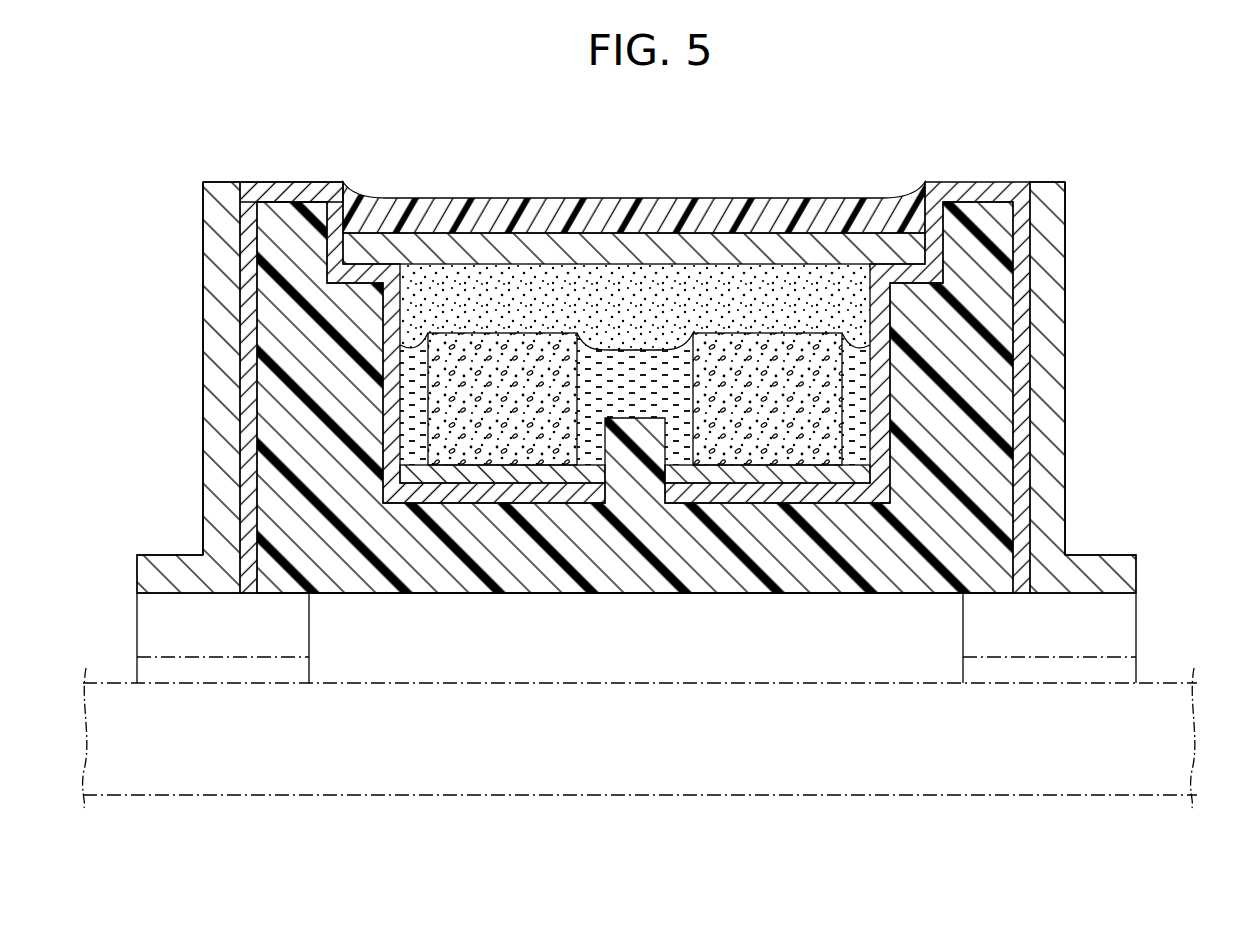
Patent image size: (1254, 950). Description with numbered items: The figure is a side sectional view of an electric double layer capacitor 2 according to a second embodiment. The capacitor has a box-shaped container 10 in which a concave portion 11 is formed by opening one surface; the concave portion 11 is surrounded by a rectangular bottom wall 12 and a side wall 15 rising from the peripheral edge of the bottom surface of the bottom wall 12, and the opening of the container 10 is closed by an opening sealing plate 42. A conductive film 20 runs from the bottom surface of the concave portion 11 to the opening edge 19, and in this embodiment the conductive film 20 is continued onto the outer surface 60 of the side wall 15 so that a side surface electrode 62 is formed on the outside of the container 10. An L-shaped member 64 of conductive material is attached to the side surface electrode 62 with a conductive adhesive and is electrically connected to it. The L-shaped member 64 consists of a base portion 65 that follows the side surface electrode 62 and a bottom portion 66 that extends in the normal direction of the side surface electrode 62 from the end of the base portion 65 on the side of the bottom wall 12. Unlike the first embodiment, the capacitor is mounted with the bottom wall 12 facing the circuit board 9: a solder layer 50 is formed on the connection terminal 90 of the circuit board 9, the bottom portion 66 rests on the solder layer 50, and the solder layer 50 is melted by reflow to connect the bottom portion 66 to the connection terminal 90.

The electric double layer capacitor 2 is at (278, 104).
The circuit board 9 is at (768, 797).
The container 10 is at (375, 598).
The concave portion 11 is at (642, 398).
The bottom wall 12 is at (642, 583).
The side wall 15 is at (275, 385).
The opening edge 19 is at (278, 183).
The conductive film 20 is at (326, 178).
The opening sealing plate 42 is at (772, 246).
The solder layer 50 is at (1138, 623).
The outer surface 60 is at (258, 283).
The side surface electrode 62 is at (1025, 283).
The L-shaped member 64 is at (1072, 337).
The base portion 65 is at (1055, 387).
The bottom portion 66 is at (1100, 560).
The connection terminal 90 is at (1138, 673).